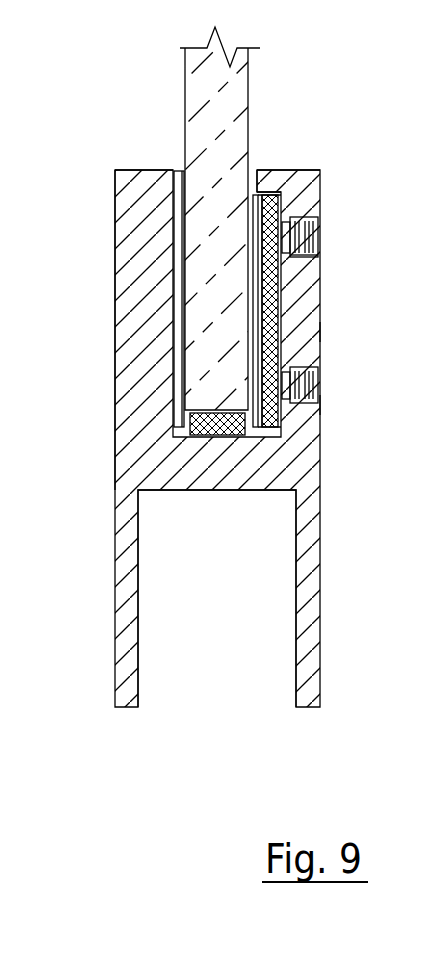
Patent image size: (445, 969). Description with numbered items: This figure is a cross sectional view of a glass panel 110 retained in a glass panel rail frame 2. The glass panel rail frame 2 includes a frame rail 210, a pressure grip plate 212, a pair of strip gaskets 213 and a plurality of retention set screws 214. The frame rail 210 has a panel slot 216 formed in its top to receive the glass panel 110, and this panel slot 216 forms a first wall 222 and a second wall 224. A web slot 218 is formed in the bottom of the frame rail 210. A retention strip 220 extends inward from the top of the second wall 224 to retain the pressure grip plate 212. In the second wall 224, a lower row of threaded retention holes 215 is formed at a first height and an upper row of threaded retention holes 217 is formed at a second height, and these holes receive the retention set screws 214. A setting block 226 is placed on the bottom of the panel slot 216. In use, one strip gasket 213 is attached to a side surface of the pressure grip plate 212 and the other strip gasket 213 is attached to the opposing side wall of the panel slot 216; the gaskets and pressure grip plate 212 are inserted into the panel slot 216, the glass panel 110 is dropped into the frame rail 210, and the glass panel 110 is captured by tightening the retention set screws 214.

The glass panel rail frame 2 is at (346, 247).
The glass panel 110 is at (247, 96).
The frame rail 210 is at (320, 452).
The pressure grip plate 212 is at (279, 352).
The strip gasket 213 is at (250, 205).
The retention set screw 214 is at (319, 216).
The lower row of threaded retention holes 215 is at (319, 405).
The panel slot 216 is at (176, 277).
The upper row of threaded retention holes 217 is at (319, 258).
The web slot 218 is at (270, 595).
The retention strip 220 is at (270, 170).
The first wall 222 is at (115, 385).
The second wall 224 is at (319, 333).
The setting block 226 is at (205, 433).